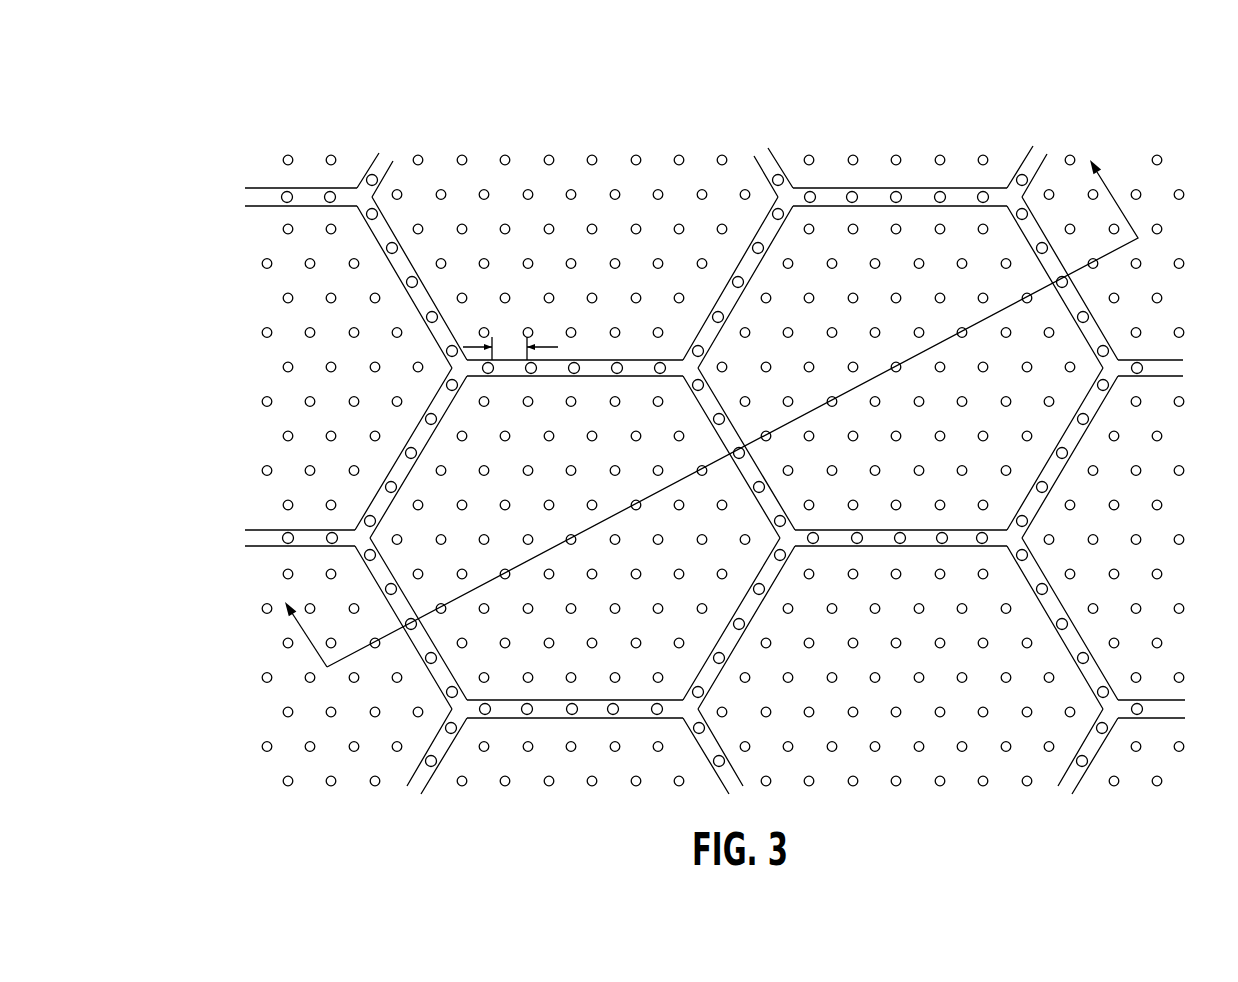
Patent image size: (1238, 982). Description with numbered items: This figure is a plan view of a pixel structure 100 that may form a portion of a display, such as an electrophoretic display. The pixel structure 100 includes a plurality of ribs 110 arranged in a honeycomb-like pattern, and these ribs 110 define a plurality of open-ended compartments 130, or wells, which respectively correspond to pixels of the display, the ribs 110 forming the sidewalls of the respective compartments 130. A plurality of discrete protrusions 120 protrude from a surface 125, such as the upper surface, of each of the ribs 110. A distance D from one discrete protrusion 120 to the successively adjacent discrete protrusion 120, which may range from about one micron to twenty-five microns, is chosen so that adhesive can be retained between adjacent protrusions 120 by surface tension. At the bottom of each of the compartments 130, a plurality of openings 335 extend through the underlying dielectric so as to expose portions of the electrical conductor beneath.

The pixel structure 100 is at (1023, 87).
The ribs 110 is at (713, 403).
The discrete protrusions 120 is at (705, 418).
The surface 125 is at (430, 640).
The compartments 130 is at (827, 227).
The openings 335 is at (441, 470).